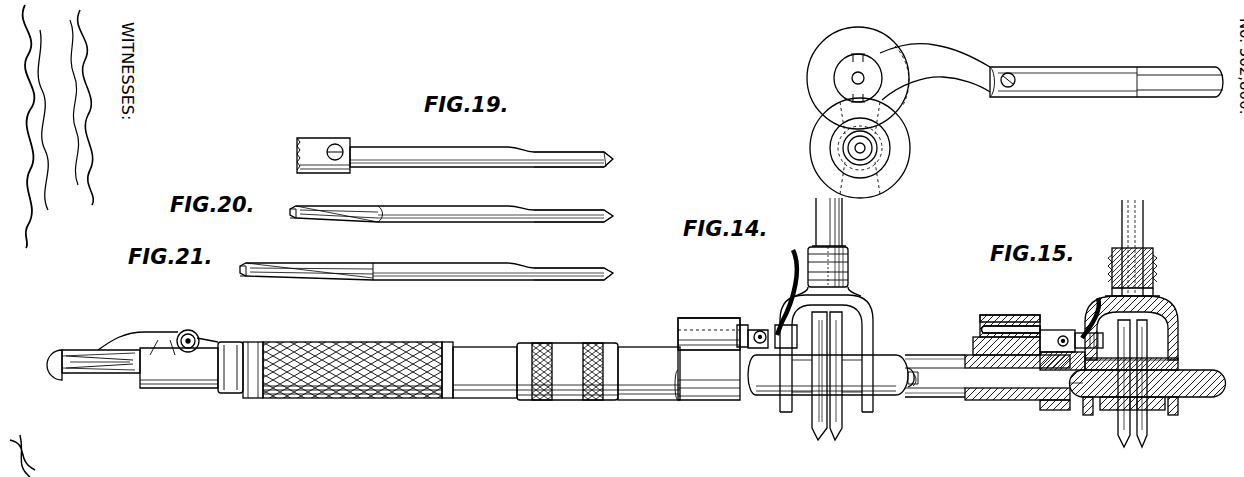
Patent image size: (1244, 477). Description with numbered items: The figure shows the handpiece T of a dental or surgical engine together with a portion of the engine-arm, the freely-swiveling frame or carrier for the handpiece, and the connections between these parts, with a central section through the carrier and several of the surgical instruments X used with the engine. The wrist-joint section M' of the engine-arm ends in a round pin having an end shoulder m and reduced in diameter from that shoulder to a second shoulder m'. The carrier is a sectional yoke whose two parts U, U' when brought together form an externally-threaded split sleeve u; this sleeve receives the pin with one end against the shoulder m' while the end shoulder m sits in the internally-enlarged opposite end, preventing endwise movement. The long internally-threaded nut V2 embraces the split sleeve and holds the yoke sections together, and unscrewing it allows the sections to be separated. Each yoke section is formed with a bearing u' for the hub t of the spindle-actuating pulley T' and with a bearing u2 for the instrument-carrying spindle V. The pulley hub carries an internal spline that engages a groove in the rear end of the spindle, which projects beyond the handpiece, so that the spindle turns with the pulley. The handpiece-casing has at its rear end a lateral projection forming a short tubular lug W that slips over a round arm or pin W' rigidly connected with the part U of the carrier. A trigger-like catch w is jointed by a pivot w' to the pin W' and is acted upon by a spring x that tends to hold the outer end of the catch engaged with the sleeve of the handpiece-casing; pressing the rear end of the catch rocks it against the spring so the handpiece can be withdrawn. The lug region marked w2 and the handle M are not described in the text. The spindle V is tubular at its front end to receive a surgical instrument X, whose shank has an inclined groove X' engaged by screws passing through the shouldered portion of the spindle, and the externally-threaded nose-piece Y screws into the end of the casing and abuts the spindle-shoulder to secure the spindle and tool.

In FIG. 19, the surgical instrument X is at (455, 148).
In FIG. 20, the surgical instrument X is at (451, 202).
In FIG. 21, the surgical instrument X is at (426, 259).
In FIG. 14, the surgical instrument X is at (99, 385).
In FIG. 19, the inclined groove X' is at (573, 143).
In FIG. 20, the inclined groove X' is at (573, 202).
In FIG. 21, the inclined groove X' is at (571, 261).
In FIG. 14, the nose-piece Y is at (198, 372).
In FIG. 14, the handpiece T is at (363, 357).
In FIG. 14, the spindle-actuating pulley T' is at (844, 380).
In FIG. 15, the spindle-actuating pulley T' is at (1132, 395).
In FIG. 14, the tubular lug W is at (685, 359).
In FIG. 15, the tubular lug W is at (1006, 321).
In FIG. 14, the round arm or pin W' is at (691, 318).
In FIG. 15, the round arm or pin W' is at (1005, 304).
In FIG. 14, the trigger-like catch w is at (723, 319).
In FIG. 15, the trigger-like catch w is at (994, 320).
In FIG. 14, the pivot w' is at (740, 312).
In FIG. 15, the pivot w' is at (1071, 323).
In FIG. 14, the inner lug w2 is at (779, 352).
In FIG. 15, the inner lug w2 is at (1132, 349).
In FIG. 14, the carrier-yoke section U is at (821, 336).
In FIG. 15, the carrier-yoke section U is at (1060, 325).
In FIG. 14, the carrier-yoke section U' is at (845, 353).
In FIG. 15, the carrier-yoke section U' is at (1150, 328).
In FIG. 14, the externally-threaded split sleeve u is at (841, 226).
In FIG. 15, the externally-threaded split sleeve u is at (1146, 268).
In FIG. 14, the pulley-hub bearing u' is at (827, 376).
In FIG. 15, the pulley-hub bearing u' is at (1127, 416).
In FIG. 14, the spindle bearing u2 is at (898, 364).
In FIG. 15, the spindle bearing u2 is at (1195, 360).
In FIG. 14, the handpiece-spindle V is at (778, 404).
In FIG. 15, the handpiece-spindle V is at (1036, 392).
In FIG. 14, the long nut V2 is at (848, 268).
In FIG. 15, the long nut V2 is at (1165, 262).
In FIG. 14, the spring x is at (790, 278).
In FIG. 15, the spring x is at (1090, 284).
In FIG. 14, the handle M is at (1106, 70).
In FIG. 14, the wrist-joint section M' is at (898, 112).
In FIG. 15, the end shoulder m is at (1145, 291).
In FIG. 15, the shoulder m' is at (1152, 248).
In FIG. 15, the pulley hub t is at (1153, 405).